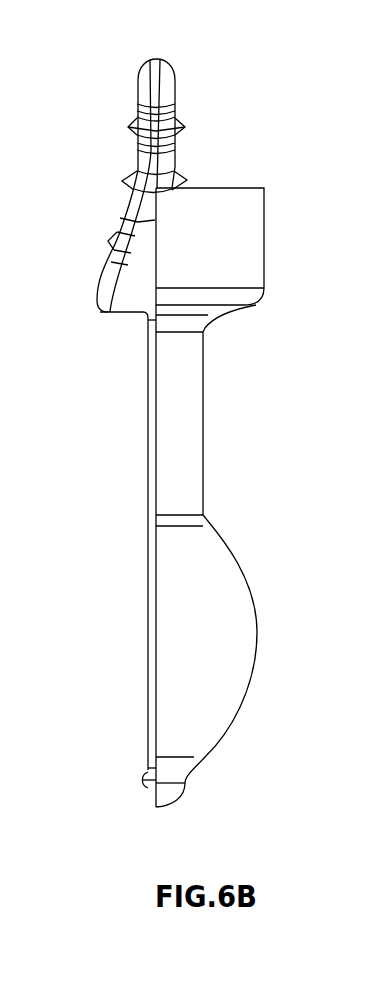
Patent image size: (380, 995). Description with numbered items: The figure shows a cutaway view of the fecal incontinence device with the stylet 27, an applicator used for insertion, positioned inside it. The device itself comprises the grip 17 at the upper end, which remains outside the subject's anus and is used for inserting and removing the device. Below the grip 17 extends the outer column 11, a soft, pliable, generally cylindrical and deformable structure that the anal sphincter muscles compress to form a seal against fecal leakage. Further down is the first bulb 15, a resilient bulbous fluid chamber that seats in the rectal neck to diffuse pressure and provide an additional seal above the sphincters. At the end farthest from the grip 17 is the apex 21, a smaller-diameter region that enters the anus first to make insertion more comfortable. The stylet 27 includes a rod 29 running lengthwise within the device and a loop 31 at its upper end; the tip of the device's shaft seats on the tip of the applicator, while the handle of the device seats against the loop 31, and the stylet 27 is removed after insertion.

The outer column 11 is at (204, 430).
The first bulb 15 is at (258, 630).
The grip 17 is at (264, 250).
The apex 21 is at (167, 795).
The stylet 27 is at (178, 78).
The rod 29 is at (148, 385).
The loop 31 is at (140, 107).